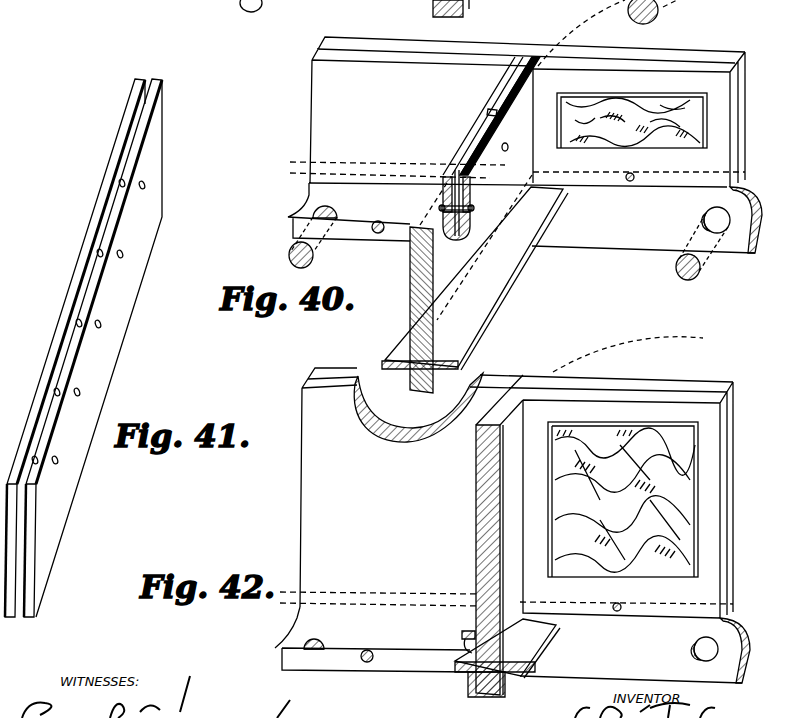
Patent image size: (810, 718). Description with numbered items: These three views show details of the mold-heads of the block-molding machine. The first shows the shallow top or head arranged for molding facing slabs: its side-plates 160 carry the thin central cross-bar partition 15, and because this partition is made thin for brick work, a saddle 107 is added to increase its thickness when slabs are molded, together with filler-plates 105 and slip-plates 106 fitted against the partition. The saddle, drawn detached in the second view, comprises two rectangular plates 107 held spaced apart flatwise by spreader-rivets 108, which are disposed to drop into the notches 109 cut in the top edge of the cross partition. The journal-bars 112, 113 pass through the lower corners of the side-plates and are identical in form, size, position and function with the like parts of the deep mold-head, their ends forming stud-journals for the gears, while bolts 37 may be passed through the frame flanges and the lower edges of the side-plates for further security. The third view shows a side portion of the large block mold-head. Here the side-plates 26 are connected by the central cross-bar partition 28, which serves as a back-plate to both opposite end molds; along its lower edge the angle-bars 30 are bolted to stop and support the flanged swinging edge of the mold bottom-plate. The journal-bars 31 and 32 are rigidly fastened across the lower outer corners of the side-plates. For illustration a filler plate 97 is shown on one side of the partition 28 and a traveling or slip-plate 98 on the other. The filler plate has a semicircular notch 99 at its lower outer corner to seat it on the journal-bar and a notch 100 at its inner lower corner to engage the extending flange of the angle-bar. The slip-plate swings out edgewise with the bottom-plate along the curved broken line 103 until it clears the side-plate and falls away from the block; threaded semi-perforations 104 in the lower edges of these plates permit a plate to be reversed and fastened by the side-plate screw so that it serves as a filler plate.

In FIG. 40, the central cross-bar partition 15 is at (410, 314).
In FIG. 42, the side-plate 26 is at (515, 380).
In FIG. 42, the central cross-bar partition 28 is at (476, 512).
In FIG. 42, the angle-bar 30 is at (500, 703).
In FIG. 42, the journal-bar 31 is at (320, 652).
In FIG. 42, the journal-bar 32 is at (695, 656).
In FIG. 40, the bolt 37 is at (378, 234).
In FIG. 42, the bolt 37 is at (367, 663).
In FIG. 42, the filler plate 97 is at (379, 508).
In FIG. 42, the slip-plate 98 is at (710, 492).
In FIG. 42, the semicircular notch 99 is at (320, 639).
In FIG. 42, the notch 100 is at (462, 634).
In FIG. 42, the broken line 103 is at (632, 354).
In FIG. 40, the threaded semi-perforation 104 is at (630, 181).
In FIG. 42, the threaded semi-perforation 104 is at (617, 611).
In FIG. 40, the filler-plate 105 is at (517, 112).
In FIG. 40, the slip-plate 106 is at (639, 119).
In FIG. 41, the saddle plate 107 is at (118, 151).
In FIG. 40, the saddle plate 107 is at (476, 245).
In FIG. 41, the spreader-rivet 108 is at (78, 320).
In FIG. 40, the spreader-rivet 108 is at (480, 209).
In FIG. 40, the notch 109 is at (488, 111).
In FIG. 40, the journal-bar 112 is at (699, 276).
In FIG. 40, the journal-bar 113 is at (289, 250).
In FIG. 40, the side-plate 160 is at (355, 34).